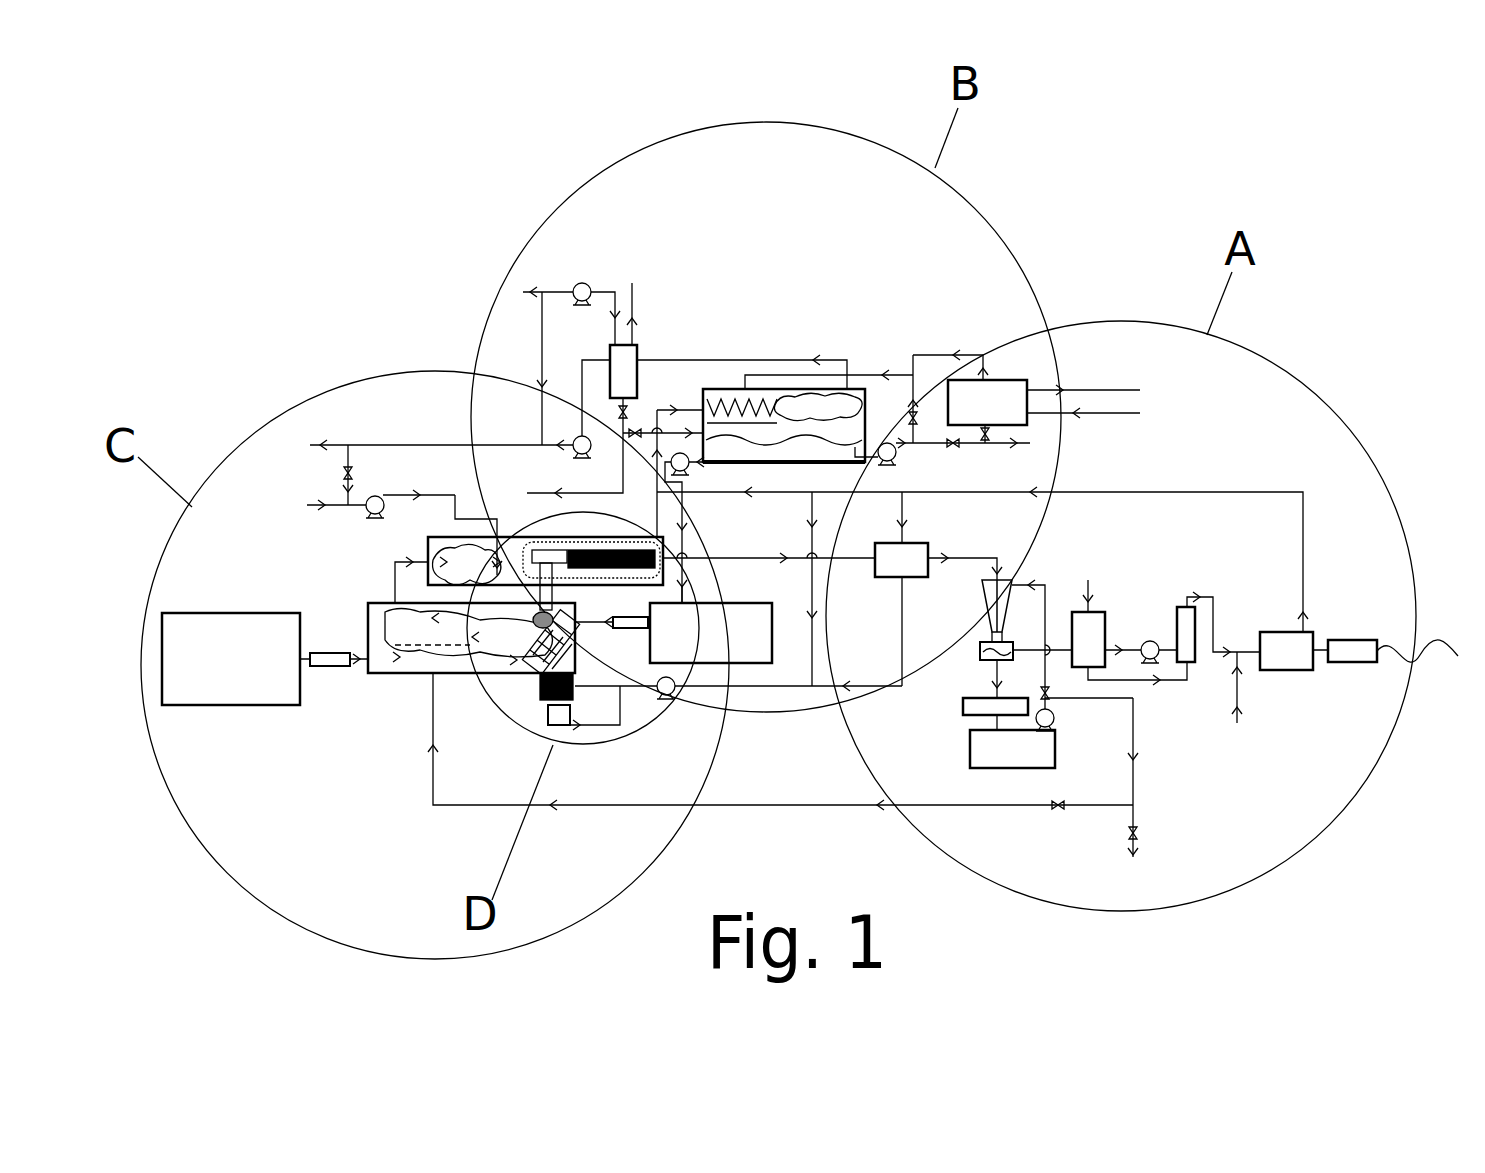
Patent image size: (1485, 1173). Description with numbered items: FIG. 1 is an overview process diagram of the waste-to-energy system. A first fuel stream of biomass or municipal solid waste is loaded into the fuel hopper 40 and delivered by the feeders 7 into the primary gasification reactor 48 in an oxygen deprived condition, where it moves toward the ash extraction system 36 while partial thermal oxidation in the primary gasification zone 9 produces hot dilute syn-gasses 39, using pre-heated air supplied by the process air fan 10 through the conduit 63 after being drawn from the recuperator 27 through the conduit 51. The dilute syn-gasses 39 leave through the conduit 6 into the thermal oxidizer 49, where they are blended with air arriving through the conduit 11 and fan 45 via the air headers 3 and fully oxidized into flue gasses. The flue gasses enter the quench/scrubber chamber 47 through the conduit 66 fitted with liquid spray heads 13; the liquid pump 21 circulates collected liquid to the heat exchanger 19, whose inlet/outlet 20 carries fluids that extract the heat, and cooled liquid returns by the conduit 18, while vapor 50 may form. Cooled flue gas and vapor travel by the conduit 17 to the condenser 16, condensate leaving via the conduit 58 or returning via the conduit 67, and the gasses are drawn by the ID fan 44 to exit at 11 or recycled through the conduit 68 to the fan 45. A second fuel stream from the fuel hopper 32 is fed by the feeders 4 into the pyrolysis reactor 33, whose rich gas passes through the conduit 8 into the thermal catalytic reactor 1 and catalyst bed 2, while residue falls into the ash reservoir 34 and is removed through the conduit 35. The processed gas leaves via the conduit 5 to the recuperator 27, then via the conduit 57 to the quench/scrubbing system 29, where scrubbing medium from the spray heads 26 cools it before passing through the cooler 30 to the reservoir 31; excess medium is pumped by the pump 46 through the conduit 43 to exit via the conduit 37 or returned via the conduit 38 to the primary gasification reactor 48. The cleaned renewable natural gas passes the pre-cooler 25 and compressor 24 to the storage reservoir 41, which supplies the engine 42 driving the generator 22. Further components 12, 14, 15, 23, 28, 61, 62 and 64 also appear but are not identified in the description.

The thermal catalytic reactor 1 is at (517, 549).
The catalyst bed 2 is at (583, 548).
The air headers 3 is at (466, 512).
The feeders 4 is at (619, 631).
The conduit 5 is at (763, 557).
The conduit 6 is at (391, 582).
The feeders 7 is at (329, 652).
The conduit 8 is at (443, 537).
The primary gasification zone 9 is at (680, 696).
The process air fan 10 is at (683, 692).
The conduit 11 is at (306, 450).
The pump 12 is at (692, 470).
The liquid spray heads 13 is at (705, 387).
The pump 14 is at (568, 280).
The inlet line 15 is at (637, 304).
The condenser 16 is at (639, 348).
The conduit 17 is at (736, 361).
The conduit 18 is at (868, 371).
The heat exchanger 19 is at (1008, 365).
The inlet/outlet 20 is at (1143, 391).
The liquid pump 21 is at (896, 462).
The generator 22 is at (1352, 639).
The separator 23 is at (985, 578).
The compressor 24 is at (1155, 639).
The pre-cooler 25 is at (1108, 619).
The spray heads 26 is at (1006, 576).
The recuperator 27 is at (872, 553).
The bypass line 28 is at (816, 648).
The quench/scrubbing system 29 is at (979, 631).
The cooler 30 is at (962, 708).
The reservoir 31 is at (985, 770).
The fuel hopper 32 is at (711, 633).
The pyrolysis reactor 33 is at (567, 611).
The ash reservoir 34 is at (576, 683).
The conduit 35 is at (622, 682).
The ash extraction system 36 is at (530, 668).
The conduit 37 is at (1127, 859).
The conduit 38 is at (430, 727).
The dilute syn-gasses 39 is at (404, 673).
The fuel hopper 40 is at (231, 659).
The storage reservoir 41 is at (1189, 664).
The synthetic gas fueled engine 42 is at (1283, 673).
The conduit 43 is at (1137, 803).
The ID fan 44 is at (577, 459).
The fan 45 is at (381, 494).
The pump 46 is at (1057, 722).
The quench/scrubber chamber 47 is at (766, 415).
The primary gasification reactor 48 is at (365, 613).
The thermal oxidizer 49 is at (423, 553).
The saturated or super-heated vapor 50 is at (863, 402).
The conduit 51 is at (877, 689).
The conduit 57 is at (957, 557).
The conduit 58 is at (549, 454).
The supply line 61 is at (687, 600).
The gas volume 62 is at (472, 628).
The conduit 63 is at (605, 692).
The feed duct 64 is at (452, 535).
The conduit 66 is at (727, 396).
The conduit 67 is at (638, 428).
The conduit 68 is at (345, 458).